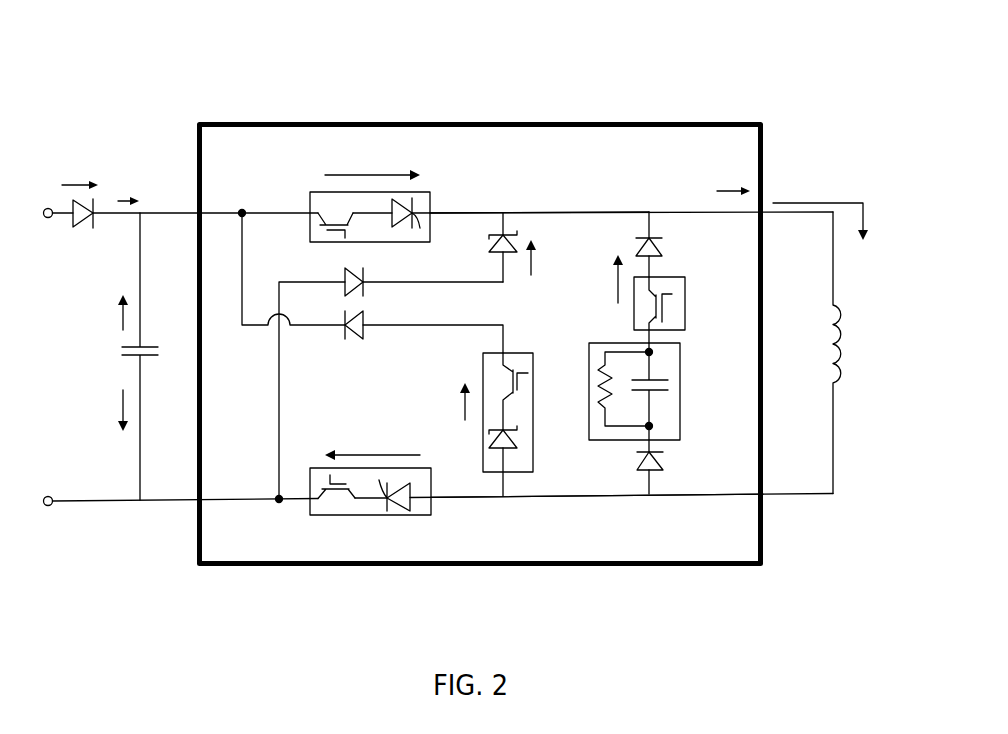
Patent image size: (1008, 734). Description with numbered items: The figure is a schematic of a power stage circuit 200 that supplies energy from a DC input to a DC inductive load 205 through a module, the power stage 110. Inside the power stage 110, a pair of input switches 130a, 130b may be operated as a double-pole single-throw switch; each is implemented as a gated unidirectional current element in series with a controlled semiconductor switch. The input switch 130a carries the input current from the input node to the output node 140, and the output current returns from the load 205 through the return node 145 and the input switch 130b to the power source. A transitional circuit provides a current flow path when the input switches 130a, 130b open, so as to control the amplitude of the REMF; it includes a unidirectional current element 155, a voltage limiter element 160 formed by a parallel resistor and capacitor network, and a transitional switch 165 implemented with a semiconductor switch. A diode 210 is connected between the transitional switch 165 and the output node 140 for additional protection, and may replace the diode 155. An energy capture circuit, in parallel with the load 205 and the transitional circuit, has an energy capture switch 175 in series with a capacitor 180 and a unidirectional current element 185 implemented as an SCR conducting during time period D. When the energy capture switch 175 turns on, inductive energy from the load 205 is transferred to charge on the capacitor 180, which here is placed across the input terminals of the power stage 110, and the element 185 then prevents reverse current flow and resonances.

The power converter circuit 200 is at (155, 78).
The power stage 110 is at (743, 157).
The input switch 130a is at (430, 200).
The input switch 130b is at (432, 503).
The output node 140 is at (552, 212).
The return node 145 is at (577, 494).
The unidirectional current element 155 is at (666, 466).
The voltage limiter element 160 is at (680, 396).
The transitional switch 165 is at (685, 277).
The energy capture switch 175 is at (533, 440).
The capacitor 180 is at (124, 356).
The unidirectional current element 185 is at (488, 246).
The inductor load 205 is at (845, 330).
The diode 210 is at (638, 247).